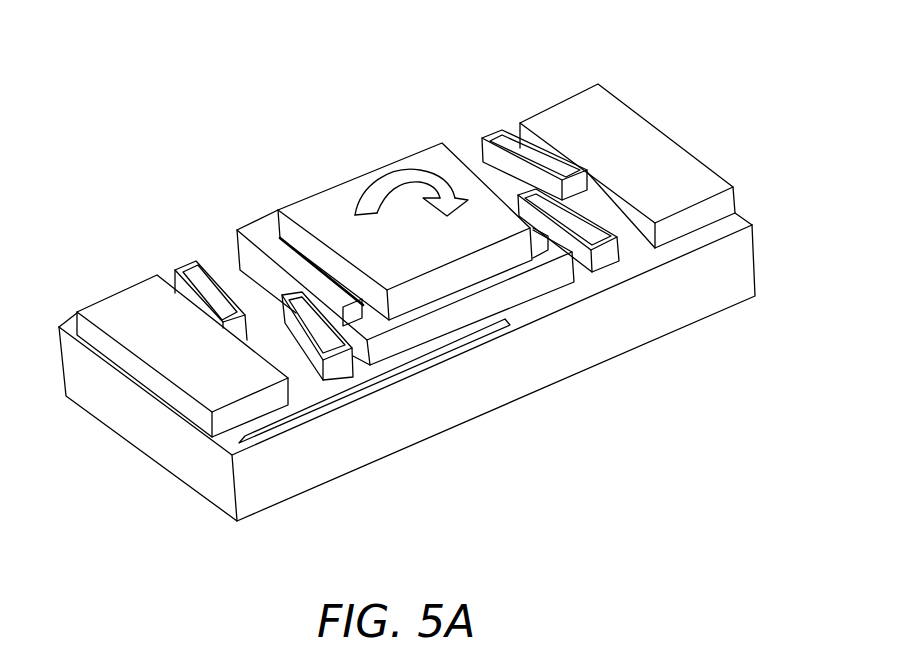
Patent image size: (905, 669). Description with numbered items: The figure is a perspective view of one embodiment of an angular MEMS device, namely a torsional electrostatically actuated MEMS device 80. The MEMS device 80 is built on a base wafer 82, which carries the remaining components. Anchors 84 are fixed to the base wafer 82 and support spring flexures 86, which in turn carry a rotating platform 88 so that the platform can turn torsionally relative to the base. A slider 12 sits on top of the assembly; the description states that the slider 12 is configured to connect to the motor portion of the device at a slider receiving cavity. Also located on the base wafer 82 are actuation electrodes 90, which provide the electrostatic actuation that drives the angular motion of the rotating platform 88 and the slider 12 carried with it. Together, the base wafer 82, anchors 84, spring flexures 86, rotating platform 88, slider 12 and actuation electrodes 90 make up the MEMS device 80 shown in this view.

The torsional electrostatically actuated MEMS device 80 is at (740, 153).
The base wafer 82 is at (757, 282).
The anchors 84 is at (150, 330).
The spring flexures 86 is at (177, 265).
The rotating platform 88 is at (237, 232).
The slider 12 is at (323, 203).
The actuation electrodes 90 is at (512, 330).